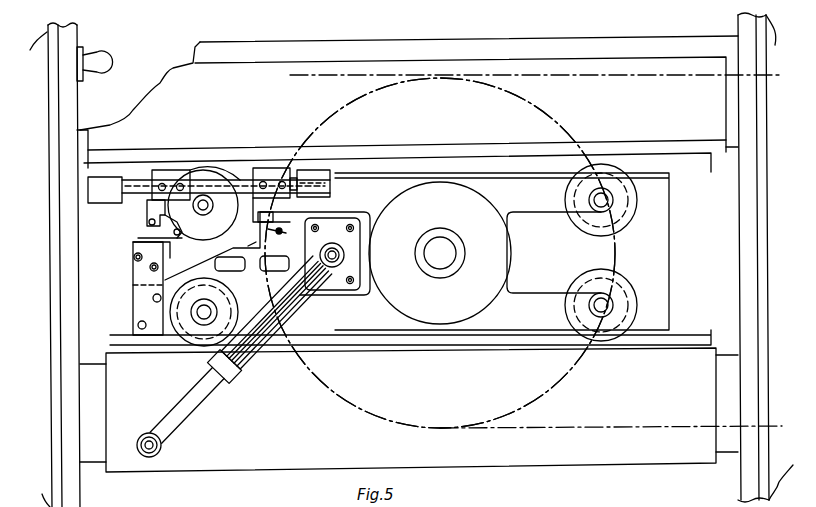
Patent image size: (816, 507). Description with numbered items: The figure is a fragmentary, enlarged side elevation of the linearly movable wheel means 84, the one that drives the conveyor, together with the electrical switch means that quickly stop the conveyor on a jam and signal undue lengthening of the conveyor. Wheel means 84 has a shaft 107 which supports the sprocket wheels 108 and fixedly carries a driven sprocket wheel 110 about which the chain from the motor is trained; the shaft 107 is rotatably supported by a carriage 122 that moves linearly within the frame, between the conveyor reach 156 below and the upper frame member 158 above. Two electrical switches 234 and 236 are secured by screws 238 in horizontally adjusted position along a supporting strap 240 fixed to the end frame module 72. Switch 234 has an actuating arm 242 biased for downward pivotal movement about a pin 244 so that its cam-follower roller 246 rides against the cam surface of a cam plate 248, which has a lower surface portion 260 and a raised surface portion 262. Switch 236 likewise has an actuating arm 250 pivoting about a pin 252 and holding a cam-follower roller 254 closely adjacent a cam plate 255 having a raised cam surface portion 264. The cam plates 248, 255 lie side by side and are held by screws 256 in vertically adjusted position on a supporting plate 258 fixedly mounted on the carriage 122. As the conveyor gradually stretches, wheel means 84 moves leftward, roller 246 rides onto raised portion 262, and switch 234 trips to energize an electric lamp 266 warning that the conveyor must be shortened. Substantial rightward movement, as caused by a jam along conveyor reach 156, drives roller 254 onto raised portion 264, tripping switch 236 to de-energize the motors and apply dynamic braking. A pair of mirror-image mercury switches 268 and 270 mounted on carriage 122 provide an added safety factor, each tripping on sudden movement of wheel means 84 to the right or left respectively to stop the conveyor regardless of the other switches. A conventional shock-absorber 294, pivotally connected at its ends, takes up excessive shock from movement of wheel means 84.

The end frame module 72 is at (47, 267).
The wheel means 84 is at (554, 130).
The shaft 107 is at (439, 263).
The sprocket wheels 108 is at (548, 388).
The driven sprocket wheel 110 is at (477, 305).
The carriage 122 is at (654, 256).
The conveyor reach 156 is at (652, 425).
The upper beam 158 is at (644, 78).
The electrical switch 234 is at (168, 175).
The electrical switch 236 is at (273, 168).
The screws 238 is at (267, 173).
The supporting strap 240 is at (133, 180).
The actuating arm 242 is at (170, 230).
The pin 244 is at (147, 213).
The cam-follower roller 246 is at (175, 235).
The cam plate 248 is at (134, 258).
The actuating arm 250 is at (322, 213).
The pin 252 is at (277, 216).
The cam-follower roller 254 is at (307, 234).
The cam plate 255 is at (249, 250).
The screws 256 is at (150, 268).
The supporting plate 258 is at (143, 278).
The lower surface portion 260 is at (185, 238).
The raised surface portion 262 is at (228, 216).
The raised cam surface portion 264 is at (279, 236).
The electric lamp 266 is at (117, 62).
The mercury switch 268 is at (223, 265).
The mercury switch 270 is at (272, 272).
The shock-absorber 294 is at (247, 374).